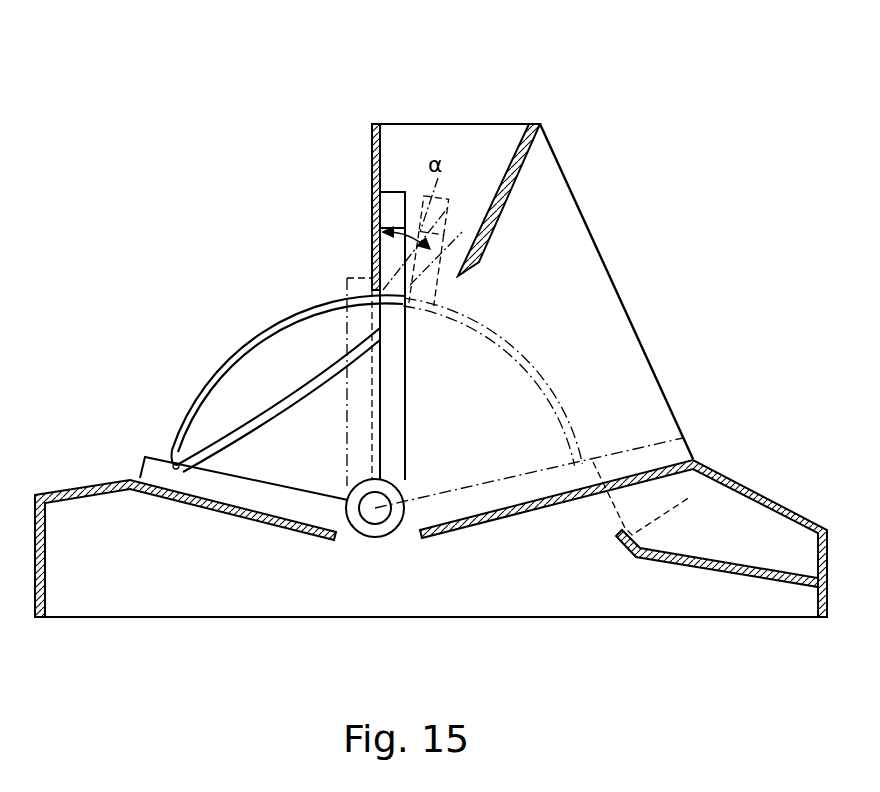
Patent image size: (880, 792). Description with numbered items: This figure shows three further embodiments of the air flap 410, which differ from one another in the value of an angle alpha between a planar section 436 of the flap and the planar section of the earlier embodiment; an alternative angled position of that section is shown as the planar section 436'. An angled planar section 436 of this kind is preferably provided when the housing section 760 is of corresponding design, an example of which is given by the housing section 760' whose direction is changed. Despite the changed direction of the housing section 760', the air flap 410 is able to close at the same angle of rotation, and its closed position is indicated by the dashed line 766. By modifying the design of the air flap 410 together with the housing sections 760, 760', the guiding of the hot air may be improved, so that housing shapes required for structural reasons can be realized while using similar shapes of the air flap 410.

The air flap 410 is at (170, 322).
The planar section 436 is at (369, 335).
The planar section 436' is at (492, 369).
The housing section 760 is at (623, 527).
The housing section 760' is at (705, 533).
The dashed line 766 is at (490, 487).